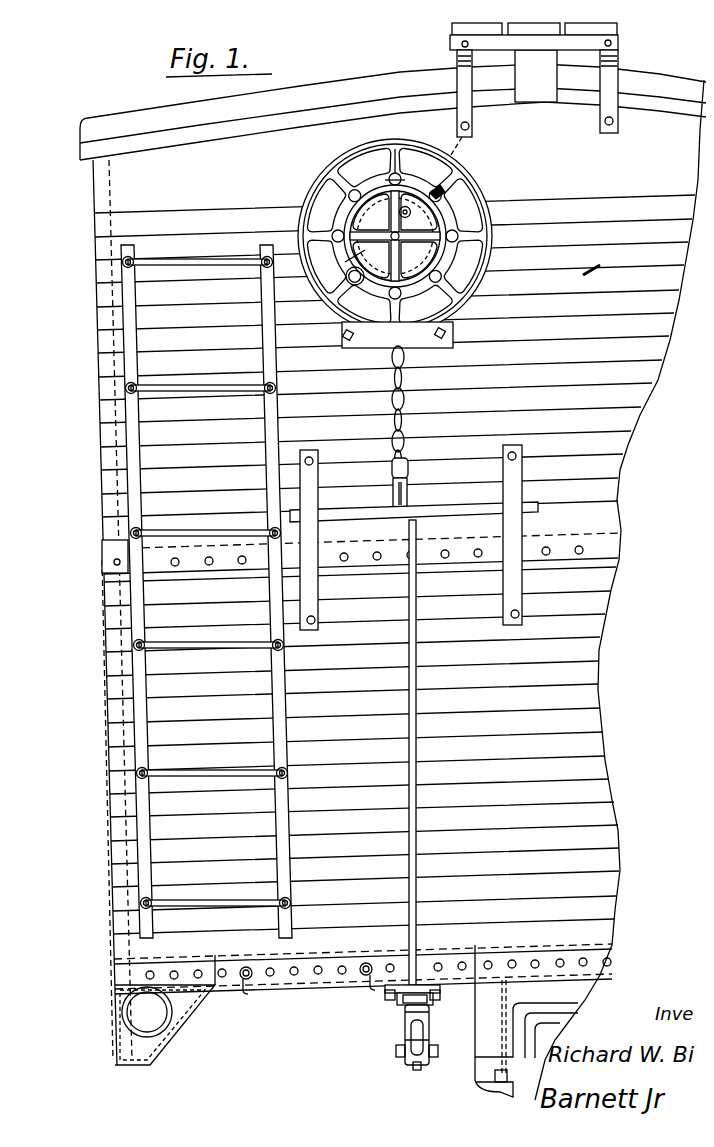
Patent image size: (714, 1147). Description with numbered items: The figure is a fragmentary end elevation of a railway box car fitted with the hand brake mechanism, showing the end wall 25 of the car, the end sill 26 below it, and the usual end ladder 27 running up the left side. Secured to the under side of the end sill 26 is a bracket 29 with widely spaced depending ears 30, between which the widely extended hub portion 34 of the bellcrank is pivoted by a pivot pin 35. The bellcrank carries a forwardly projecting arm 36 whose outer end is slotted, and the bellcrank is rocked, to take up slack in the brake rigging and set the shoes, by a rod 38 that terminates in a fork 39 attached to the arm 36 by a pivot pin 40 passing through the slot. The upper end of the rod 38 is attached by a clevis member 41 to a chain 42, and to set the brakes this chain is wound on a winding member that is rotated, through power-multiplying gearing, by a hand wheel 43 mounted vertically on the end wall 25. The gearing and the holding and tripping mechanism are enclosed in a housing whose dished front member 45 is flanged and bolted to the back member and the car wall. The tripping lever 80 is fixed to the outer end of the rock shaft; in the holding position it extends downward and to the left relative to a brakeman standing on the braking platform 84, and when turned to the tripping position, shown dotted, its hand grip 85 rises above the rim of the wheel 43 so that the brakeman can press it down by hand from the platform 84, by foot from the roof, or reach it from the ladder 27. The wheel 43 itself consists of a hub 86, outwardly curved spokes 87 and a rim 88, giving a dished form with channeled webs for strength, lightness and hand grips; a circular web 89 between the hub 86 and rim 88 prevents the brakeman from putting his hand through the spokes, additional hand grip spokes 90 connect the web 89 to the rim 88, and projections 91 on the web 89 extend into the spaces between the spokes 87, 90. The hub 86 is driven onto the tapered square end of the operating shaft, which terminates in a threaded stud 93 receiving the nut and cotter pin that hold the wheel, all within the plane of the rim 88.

The end wall 25 is at (570, 705).
The end sill 26 is at (226, 988).
The end ladder 27 is at (138, 392).
The bracket 29 is at (395, 989).
The depending ears 30 is at (403, 1003).
The hub portion 34 is at (410, 1030).
The pivot pin 35 is at (400, 1000).
The forwardly projecting arm 36 is at (413, 1065).
The rod 38 is at (412, 745).
The fork 39 is at (405, 1050).
The pivot pin 40 is at (433, 1060).
The clevis member 41 is at (408, 478).
The chain 42 is at (404, 408).
The hand wheel 43 is at (440, 232).
The front member 45 is at (447, 203).
The tripping lever 80 is at (377, 223).
The braking platform 84 is at (540, 504).
The hand grip 85 is at (325, 263).
The hub 86 is at (350, 260).
The outwardly curved spokes 87 is at (397, 178).
The rim 88 is at (365, 176).
The circular web 89 is at (383, 178).
The hand grip spokes 90 is at (350, 200).
The projections 91 is at (370, 178).
The threaded stud 93 is at (463, 277).